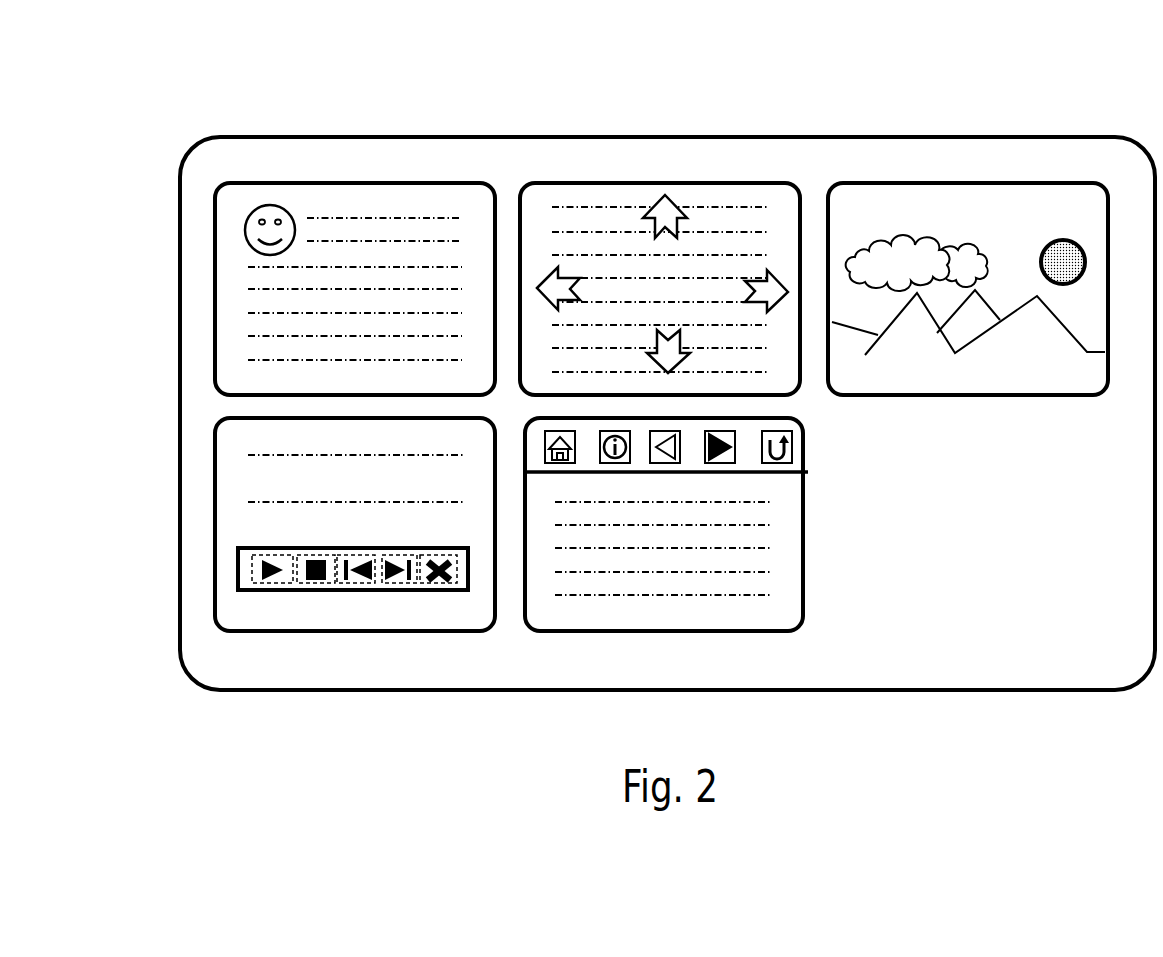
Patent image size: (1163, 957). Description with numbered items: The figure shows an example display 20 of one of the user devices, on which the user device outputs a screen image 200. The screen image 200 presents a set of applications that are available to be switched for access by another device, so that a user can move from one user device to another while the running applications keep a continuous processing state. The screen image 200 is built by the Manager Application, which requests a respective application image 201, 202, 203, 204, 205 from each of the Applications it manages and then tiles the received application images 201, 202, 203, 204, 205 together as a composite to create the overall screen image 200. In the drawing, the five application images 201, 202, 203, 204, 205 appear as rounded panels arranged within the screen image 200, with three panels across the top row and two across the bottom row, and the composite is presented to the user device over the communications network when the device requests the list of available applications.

The display 20 is at (950, 64).
The screen image 200 is at (298, 133).
The application image 201 is at (438, 183).
The application image 202 is at (733, 183).
The application image 203 is at (975, 183).
The application image 204 is at (290, 632).
The application image 205 is at (612, 632).